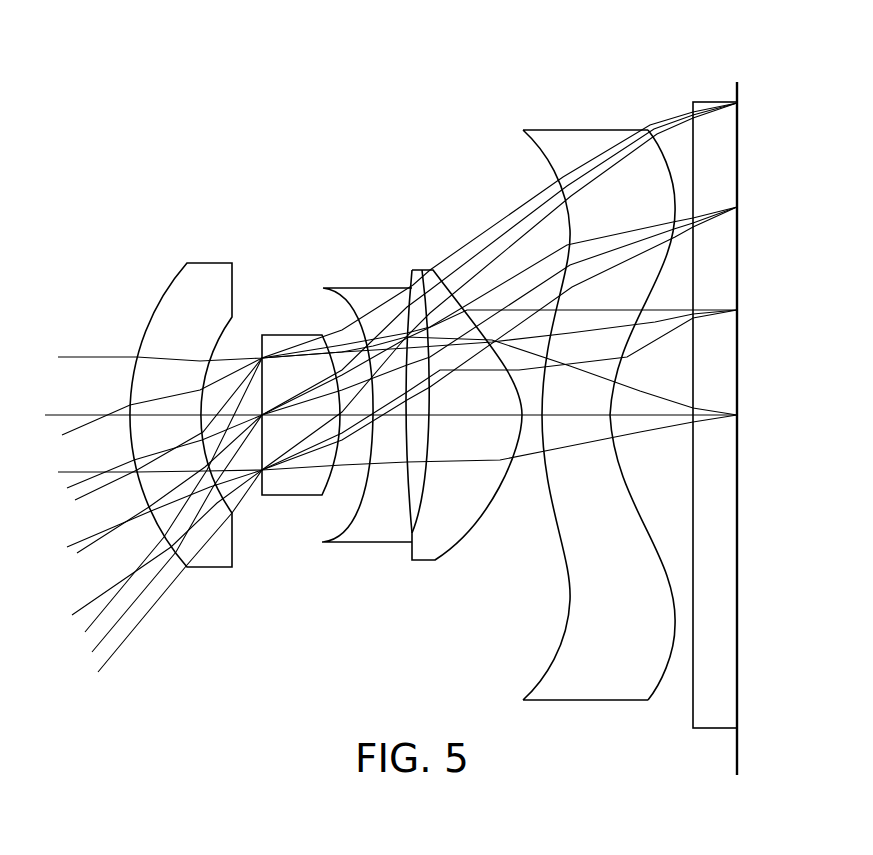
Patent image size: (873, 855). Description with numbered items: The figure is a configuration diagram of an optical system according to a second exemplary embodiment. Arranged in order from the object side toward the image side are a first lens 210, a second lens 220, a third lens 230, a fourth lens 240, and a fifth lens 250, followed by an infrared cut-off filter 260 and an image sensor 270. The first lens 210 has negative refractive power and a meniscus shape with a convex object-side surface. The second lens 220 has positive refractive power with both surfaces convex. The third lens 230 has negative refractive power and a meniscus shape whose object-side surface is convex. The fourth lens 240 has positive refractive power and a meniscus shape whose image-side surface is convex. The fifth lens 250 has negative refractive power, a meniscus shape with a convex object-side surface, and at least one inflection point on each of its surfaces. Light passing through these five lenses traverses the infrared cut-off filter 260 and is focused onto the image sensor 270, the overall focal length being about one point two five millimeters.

The first lens 210 is at (197, 280).
The second lens 220 is at (273, 338).
The third lens 230 is at (342, 290).
The fourth lens 240 is at (413, 270).
The fifth lens 250 is at (570, 130).
The infrared cut-off filter 260 is at (695, 102).
The image sensor 270 is at (738, 90).